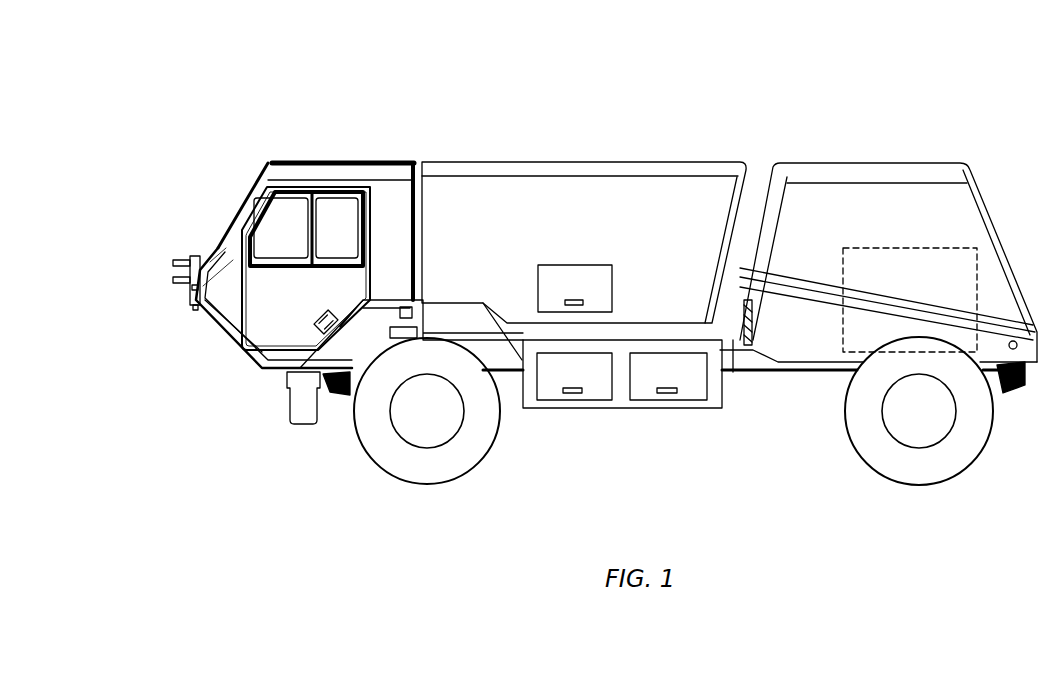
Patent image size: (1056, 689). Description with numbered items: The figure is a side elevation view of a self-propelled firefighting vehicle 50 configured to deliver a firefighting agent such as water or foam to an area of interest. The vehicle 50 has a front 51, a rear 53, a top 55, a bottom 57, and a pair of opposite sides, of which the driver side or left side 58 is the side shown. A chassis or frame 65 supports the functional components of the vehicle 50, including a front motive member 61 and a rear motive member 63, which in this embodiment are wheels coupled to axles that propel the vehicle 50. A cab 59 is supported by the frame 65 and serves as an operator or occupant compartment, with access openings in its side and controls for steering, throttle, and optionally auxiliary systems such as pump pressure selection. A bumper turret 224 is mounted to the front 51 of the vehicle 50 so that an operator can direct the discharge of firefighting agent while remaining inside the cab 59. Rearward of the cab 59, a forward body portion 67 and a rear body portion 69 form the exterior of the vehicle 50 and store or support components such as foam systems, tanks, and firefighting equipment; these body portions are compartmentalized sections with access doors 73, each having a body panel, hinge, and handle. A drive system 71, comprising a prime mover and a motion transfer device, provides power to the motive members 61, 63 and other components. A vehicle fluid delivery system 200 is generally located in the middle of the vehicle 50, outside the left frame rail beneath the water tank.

The firefighting vehicle 50 is at (732, 52).
The front 51 is at (220, 251).
The rear 53 is at (1003, 247).
The top 55 is at (594, 162).
The bottom 57 is at (622, 408).
The left side 58 is at (306, 309).
The cab 59 is at (352, 160).
The front motive member 61 is at (370, 445).
The rear motive member 63 is at (987, 437).
The frame 65 is at (793, 371).
The forward body portion 67 is at (587, 225).
The rear body portion 69 is at (827, 230).
The drive system 71 is at (880, 248).
The access door 73 is at (609, 287).
The fluid delivery system 200 is at (737, 347).
The bumper turret 224 is at (168, 256).